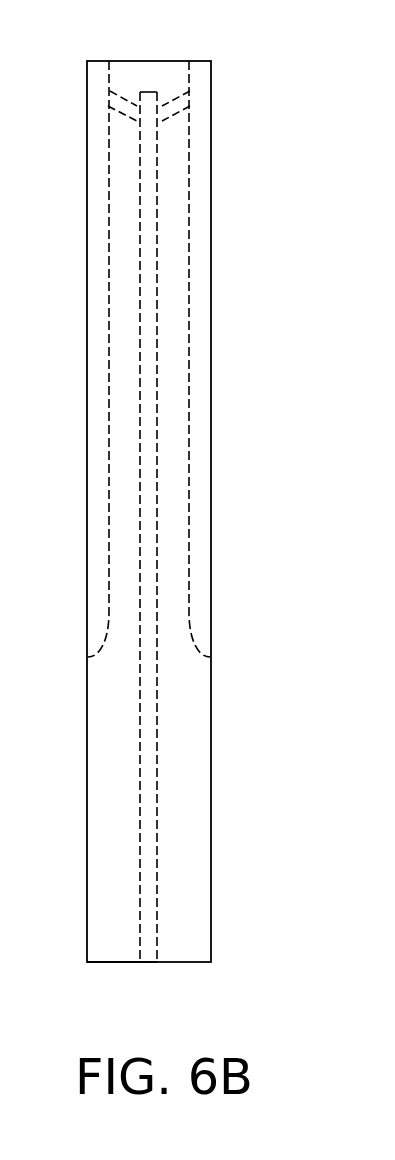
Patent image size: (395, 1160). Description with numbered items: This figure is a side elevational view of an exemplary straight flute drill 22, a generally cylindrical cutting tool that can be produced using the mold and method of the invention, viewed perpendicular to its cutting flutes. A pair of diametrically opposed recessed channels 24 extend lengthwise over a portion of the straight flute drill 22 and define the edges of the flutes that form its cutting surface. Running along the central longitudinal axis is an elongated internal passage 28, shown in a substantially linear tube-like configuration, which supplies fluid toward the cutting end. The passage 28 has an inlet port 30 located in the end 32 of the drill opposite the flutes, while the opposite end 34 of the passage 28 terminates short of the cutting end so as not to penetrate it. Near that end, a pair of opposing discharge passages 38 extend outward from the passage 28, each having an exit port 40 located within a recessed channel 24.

The straight flute drill 22 is at (229, 879).
The recessed channels 24 is at (110, 353).
The internal passage 28 is at (153, 758).
The inlet port 30 is at (141, 956).
The end 32 is at (106, 963).
The end of passage 34 is at (147, 90).
The discharge passages 38 is at (118, 114).
The exit port 40 is at (112, 92).